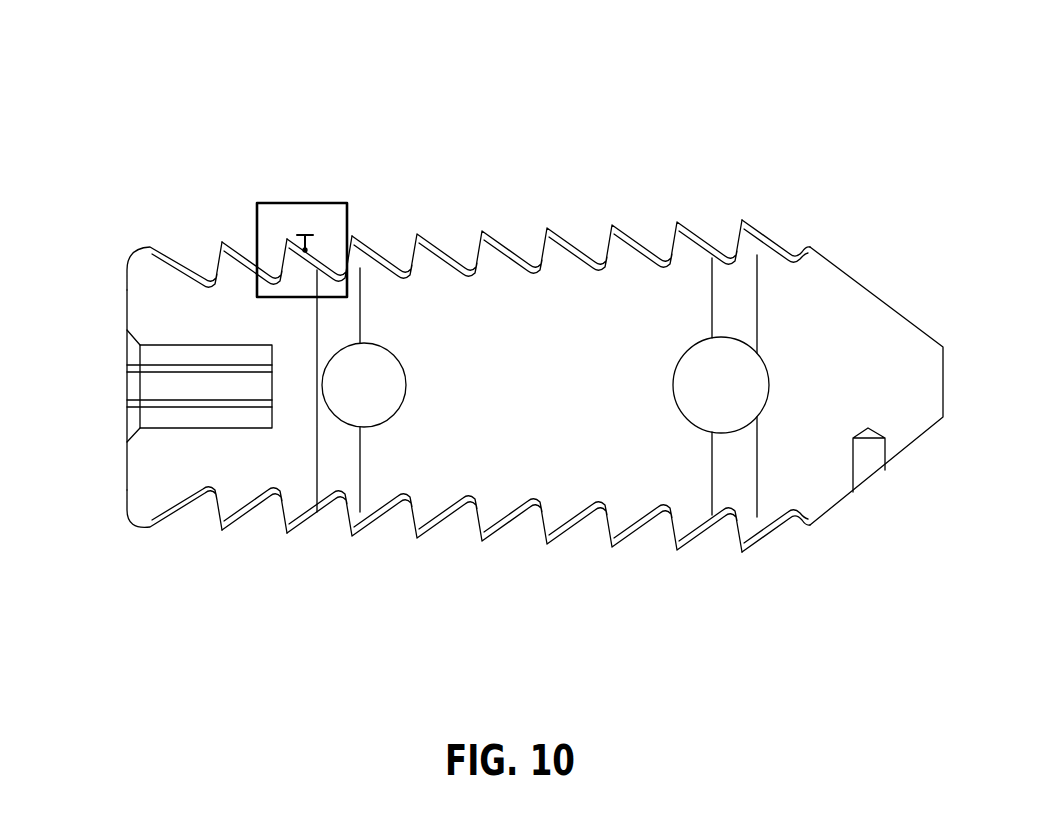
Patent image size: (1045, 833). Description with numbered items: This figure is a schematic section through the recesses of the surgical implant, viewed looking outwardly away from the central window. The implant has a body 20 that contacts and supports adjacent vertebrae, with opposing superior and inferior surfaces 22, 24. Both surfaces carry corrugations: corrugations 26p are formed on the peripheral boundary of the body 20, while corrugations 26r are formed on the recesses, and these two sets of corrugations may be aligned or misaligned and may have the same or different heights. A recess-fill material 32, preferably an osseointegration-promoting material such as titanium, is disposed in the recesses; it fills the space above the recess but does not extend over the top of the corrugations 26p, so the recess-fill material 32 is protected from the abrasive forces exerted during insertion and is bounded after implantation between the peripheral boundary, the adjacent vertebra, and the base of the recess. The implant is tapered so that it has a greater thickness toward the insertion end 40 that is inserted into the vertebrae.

The body 20 is at (553, 344).
The superior surface 22 is at (600, 130).
The inferior surface 24 is at (590, 565).
The corrugations on the peripheral boundary 26p is at (745, 220).
The corrugations on the recesses 26r is at (233, 263).
The recess-fill material 32 is at (166, 250).
The insertion end 40 is at (902, 510).